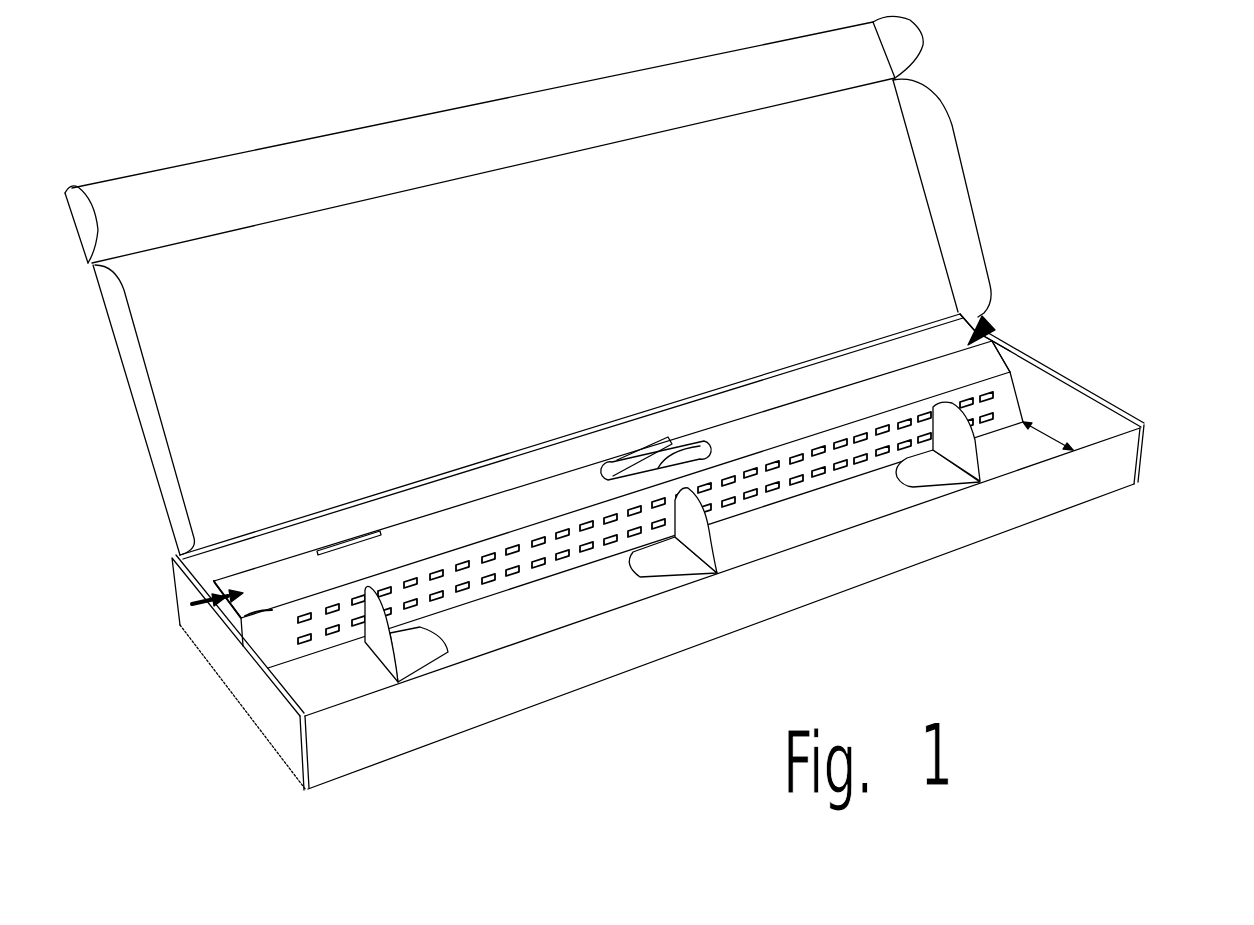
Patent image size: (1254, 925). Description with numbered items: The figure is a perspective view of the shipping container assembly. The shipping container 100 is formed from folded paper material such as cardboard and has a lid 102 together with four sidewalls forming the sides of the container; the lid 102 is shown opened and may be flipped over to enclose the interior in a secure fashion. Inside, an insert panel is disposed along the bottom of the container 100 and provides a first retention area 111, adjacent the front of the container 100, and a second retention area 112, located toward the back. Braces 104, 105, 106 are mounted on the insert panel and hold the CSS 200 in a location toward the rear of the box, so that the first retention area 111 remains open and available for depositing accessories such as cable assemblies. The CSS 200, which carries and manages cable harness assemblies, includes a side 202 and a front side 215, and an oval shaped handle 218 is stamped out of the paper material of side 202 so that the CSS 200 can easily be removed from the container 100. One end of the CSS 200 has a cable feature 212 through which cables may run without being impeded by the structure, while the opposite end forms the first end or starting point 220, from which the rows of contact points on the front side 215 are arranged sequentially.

The shipping container 100 is at (250, 692).
The lid 102 is at (575, 288).
The brace 104 is at (372, 652).
The brace 105 is at (715, 543).
The brace 106 is at (978, 448).
The first retention area 111 is at (797, 533).
The second retention area 112 is at (984, 318).
The CSS 200 is at (195, 604).
The side 202 is at (1007, 357).
The cable feature 212 is at (1027, 369).
The front side 215 is at (1010, 383).
The handle 218 is at (690, 441).
The first end 220 is at (242, 625).